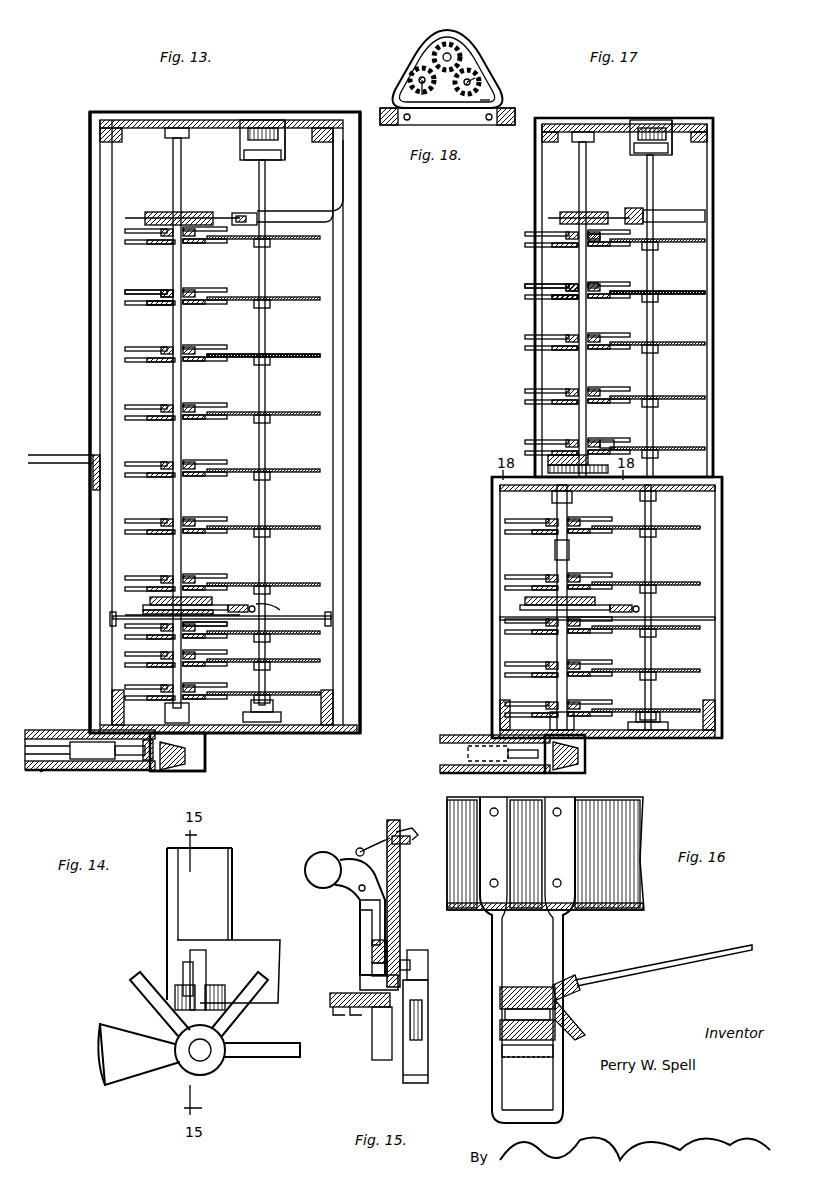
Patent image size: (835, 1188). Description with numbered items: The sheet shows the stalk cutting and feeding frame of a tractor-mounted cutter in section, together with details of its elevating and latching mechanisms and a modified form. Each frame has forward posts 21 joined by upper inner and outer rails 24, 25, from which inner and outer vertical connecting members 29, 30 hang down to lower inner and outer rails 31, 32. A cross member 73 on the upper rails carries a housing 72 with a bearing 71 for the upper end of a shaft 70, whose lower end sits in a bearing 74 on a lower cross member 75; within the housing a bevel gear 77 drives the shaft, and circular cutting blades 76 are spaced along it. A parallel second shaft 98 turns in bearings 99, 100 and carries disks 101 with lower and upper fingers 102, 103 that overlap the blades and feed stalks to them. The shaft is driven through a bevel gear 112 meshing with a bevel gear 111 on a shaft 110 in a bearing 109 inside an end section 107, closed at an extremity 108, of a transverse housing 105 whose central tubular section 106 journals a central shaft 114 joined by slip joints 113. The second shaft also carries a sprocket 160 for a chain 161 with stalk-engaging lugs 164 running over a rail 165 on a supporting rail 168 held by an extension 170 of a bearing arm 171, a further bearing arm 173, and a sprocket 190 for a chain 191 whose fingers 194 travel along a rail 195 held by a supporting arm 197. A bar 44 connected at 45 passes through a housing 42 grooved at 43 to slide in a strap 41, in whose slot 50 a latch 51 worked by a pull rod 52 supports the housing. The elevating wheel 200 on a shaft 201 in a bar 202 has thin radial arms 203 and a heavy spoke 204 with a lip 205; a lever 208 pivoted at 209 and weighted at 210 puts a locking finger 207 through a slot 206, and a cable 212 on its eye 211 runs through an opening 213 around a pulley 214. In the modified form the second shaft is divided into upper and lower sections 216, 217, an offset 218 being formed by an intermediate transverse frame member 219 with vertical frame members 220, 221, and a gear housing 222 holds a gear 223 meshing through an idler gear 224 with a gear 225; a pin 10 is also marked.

In FIG. 17, the pin 10 is at (608, 275).
In FIG. 14, the forward post 21 is at (232, 890).
In FIG. 15, the forward post 21 is at (400, 868).
In FIG. 13, the upper inner rail 24 is at (118, 142).
In FIG. 13, the upper outer rail 25 is at (318, 142).
In FIG. 13, the inner vertical connecting member 29 is at (90, 180).
In FIG. 13, the outer vertical connecting member 30 is at (360, 178).
In FIG. 13, the lower inner rail 31 is at (112, 684).
In FIG. 13, the lower outer rail 32 is at (333, 690).
In FIG. 16, the depending strap 41 is at (502, 1049).
In FIG. 16, the housing 42 is at (520, 1060).
In FIG. 16, the groove 43 is at (492, 968).
In FIG. 13, the bar 44 is at (55, 455).
In FIG. 16, the bar 44 is at (520, 985).
In FIG. 13, the bar connection 45 is at (93, 475).
In FIG. 16, the slot 50 is at (575, 1037).
In FIG. 16, the latch 51 is at (580, 995).
In FIG. 16, the pull rod 52 is at (725, 948).
In FIG. 13, the shaft 70 is at (266, 338).
In FIG. 17, the shaft 70 is at (654, 380).
In FIG. 13, the bearing 71 is at (255, 158).
In FIG. 17, the bearing 71 is at (640, 153).
In FIG. 13, the housing 72 is at (286, 158).
In FIG. 17, the housing 72 is at (672, 150).
In FIG. 13, the cross member 73 is at (145, 118).
In FIG. 17, the cross member 73 is at (632, 122).
In FIG. 13, the bearing 74 is at (274, 708).
In FIG. 13, the cross member 75 is at (268, 735).
In FIG. 13, the circular cutting blade 76 is at (300, 412).
In FIG. 17, the circular cutting blade 76 is at (684, 292).
In FIG. 13, the bevel gear 77 is at (278, 118).
In FIG. 17, the bevel gear 77 is at (670, 118).
In FIG. 13, the second shaft 98 is at (173, 326).
In FIG. 17, the second shaft 98 is at (556, 558).
In FIG. 13, the bearing 99 is at (190, 134).
In FIG. 17, the bearing 99 is at (583, 137).
In FIG. 13, the bearing 100 is at (190, 714).
In FIG. 13, the disk 101 is at (165, 405).
In FIG. 17, the disk 101 is at (575, 395).
In FIG. 13, the lower finger 102 is at (140, 288).
In FIG. 17, the lower finger 102 is at (558, 284).
In FIG. 13, the upper finger 103 is at (148, 245).
In FIG. 17, the upper finger 103 is at (604, 300).
In FIG. 13, the housing 105 is at (48, 774).
In FIG. 13, the central tubular section 106 is at (45, 770).
In FIG. 13, the end section 107 is at (68, 772).
In FIG. 13, the closed extremity 108 is at (200, 772).
In FIG. 13, the bearing 109 is at (146, 762).
In FIG. 13, the shaft 110 is at (125, 756).
In FIG. 17, the shaft 110 is at (520, 760).
In FIG. 13, the bevel gear 111 is at (175, 770).
In FIG. 13, the bevel gear 112 is at (190, 752).
In FIG. 17, the bevel gear 112 is at (585, 755).
In FIG. 13, the slip joint 113 is at (90, 760).
In FIG. 17, the slip joint 113 is at (472, 762).
In FIG. 13, the central shaft 114 is at (42, 748).
In FIG. 13, the sprocket 160 is at (150, 598).
In FIG. 13, the chain 161 is at (215, 605).
In FIG. 13, the lug 164 is at (143, 612).
In FIG. 17, the lug 164 is at (520, 606).
In FIG. 13, the rail 165 is at (250, 608).
In FIG. 17, the rail 165 is at (640, 608).
In FIG. 13, the supporting rail 168 is at (280, 610).
In FIG. 13, the extension 170 is at (225, 628).
In FIG. 13, the bearing arm 171 is at (331, 616).
In FIG. 13, the bearing arm 173 is at (125, 616).
In FIG. 13, the sprocket 190 is at (195, 211).
In FIG. 17, the sprocket 190 is at (572, 210).
In FIG. 13, the chain 191 is at (135, 217).
In FIG. 13, the finger 194 is at (238, 212).
In FIG. 17, the finger 194 is at (628, 208).
In FIG. 13, the rail 195 is at (245, 208).
In FIG. 13, the supporting arm 197 is at (296, 210).
In FIG. 17, the supporting arm 197 is at (690, 210).
In FIG. 14, the wheel 200 is at (128, 1080).
In FIG. 15, the wheel 200 is at (403, 1072).
In FIG. 14, the shaft 201 is at (200, 1058).
In FIG. 15, the shaft 201 is at (372, 1050).
In FIG. 14, the bar 202 is at (225, 1022).
In FIG. 15, the bar 202 is at (375, 1027).
In FIG. 14, the radial arm 203 is at (265, 985).
In FIG. 15, the radial arm 203 is at (425, 980).
In FIG. 14, the spoke 204 is at (130, 1055).
In FIG. 14, the lip 205 is at (104, 1085).
In FIG. 14, the slot 206 is at (193, 948).
In FIG. 15, the slot 206 is at (390, 948).
In FIG. 14, the locking finger 207 is at (183, 972).
In FIG. 15, the locking finger 207 is at (360, 982).
In FIG. 15, the lever 208 is at (362, 936).
In FIG. 15, the pivot 209 is at (358, 890).
In FIG. 15, the weight 210 is at (315, 856).
In FIG. 15, the eye 211 is at (358, 848).
In FIG. 15, the flexible cable 212 is at (366, 846).
In FIG. 15, the opening 213 is at (405, 845).
In FIG. 15, the pulley 214 is at (412, 828).
In FIG. 18, the upper shaft section 216 is at (475, 79).
In FIG. 17, the upper shaft section 216 is at (595, 262).
In FIG. 18, the lower shaft section 217 is at (405, 118).
In FIG. 17, the lower shaft section 217 is at (570, 552).
In FIG. 17, the offset 218 is at (500, 468).
In FIG. 18, the intermediate transverse frame member 219 is at (505, 105).
In FIG. 17, the intermediate transverse frame member 219 is at (715, 478).
In FIG. 17, the vertical frame member 220 is at (492, 566).
In FIG. 17, the vertical frame member 221 is at (535, 310).
In FIG. 18, the gear housing 222 is at (480, 68).
In FIG. 17, the gear housing 222 is at (550, 460).
In FIG. 18, the gear 223 is at (425, 50).
In FIG. 17, the gear 223 is at (572, 496).
In FIG. 18, the idler gear 224 is at (458, 50).
In FIG. 18, the gear 225 is at (500, 80).
In FIG. 17, the gear 225 is at (612, 440).